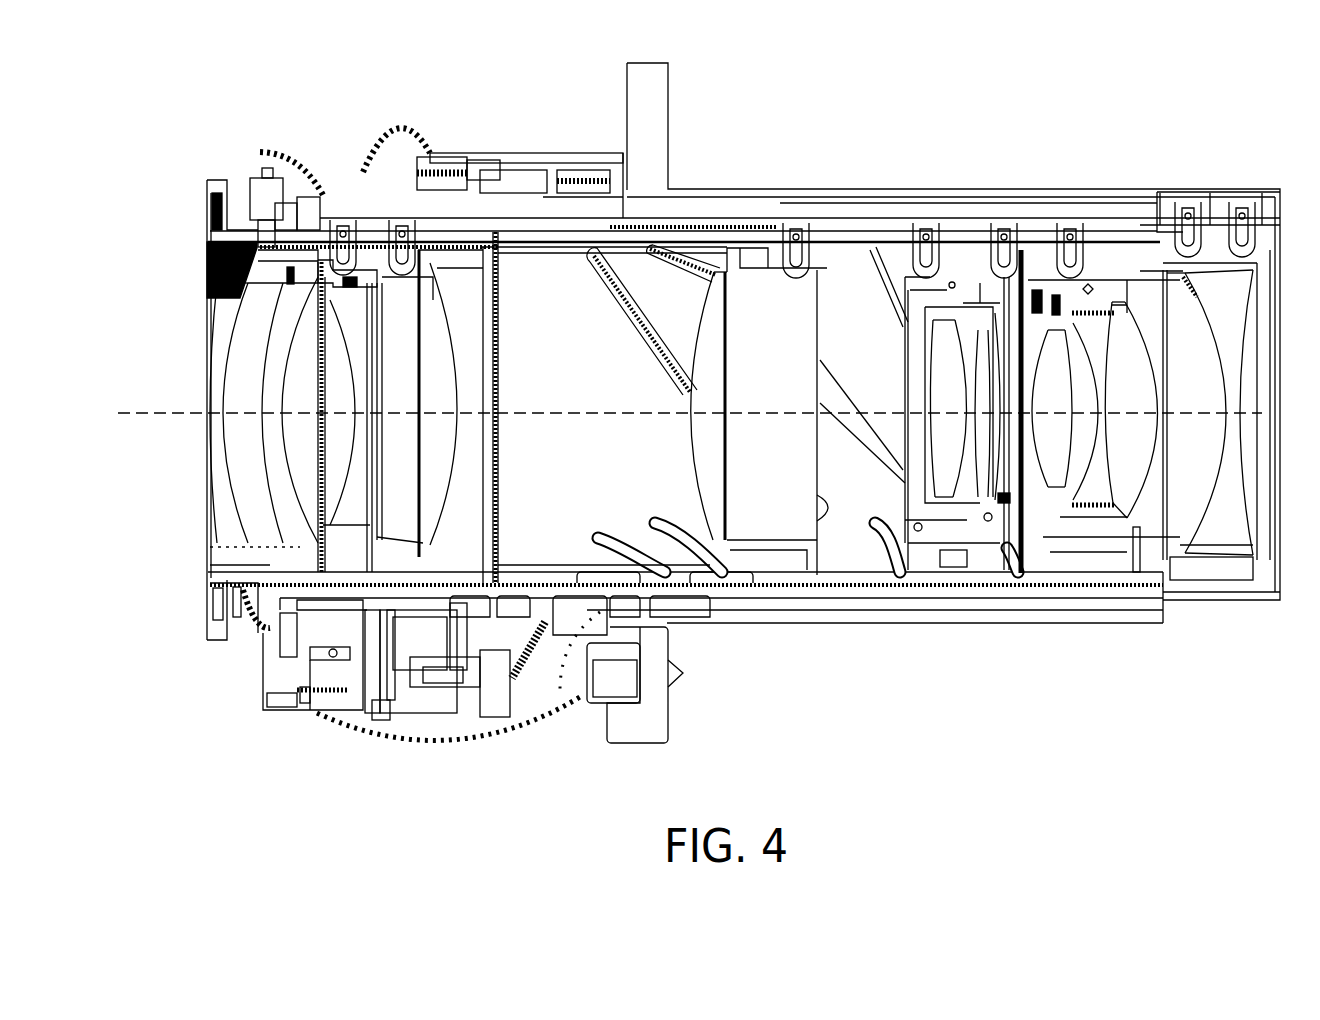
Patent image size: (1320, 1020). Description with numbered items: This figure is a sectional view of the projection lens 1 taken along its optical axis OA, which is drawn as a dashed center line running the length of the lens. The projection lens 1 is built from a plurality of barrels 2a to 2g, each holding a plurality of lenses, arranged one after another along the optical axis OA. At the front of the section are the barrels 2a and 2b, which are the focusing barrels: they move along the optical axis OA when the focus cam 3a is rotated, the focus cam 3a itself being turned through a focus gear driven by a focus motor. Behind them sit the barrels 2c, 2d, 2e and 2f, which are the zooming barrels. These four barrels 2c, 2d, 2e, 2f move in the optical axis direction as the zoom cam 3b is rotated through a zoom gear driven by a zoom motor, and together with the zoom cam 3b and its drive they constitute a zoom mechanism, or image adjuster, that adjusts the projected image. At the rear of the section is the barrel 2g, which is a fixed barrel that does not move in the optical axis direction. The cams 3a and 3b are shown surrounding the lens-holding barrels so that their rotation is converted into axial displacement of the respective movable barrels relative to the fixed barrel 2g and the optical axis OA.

The projection lens 1 is at (1162, 38).
The barrel 2a is at (343, 213).
The barrel 2b is at (405, 272).
The barrel 2c is at (760, 295).
The barrel 2d is at (945, 292).
The barrel 2e is at (1008, 275).
The barrel 2f is at (1110, 278).
The barrel 2g is at (1212, 280).
The focus cam 3a is at (437, 268).
The zoom cam 3b is at (571, 307).
The optical axis OA is at (167, 417).